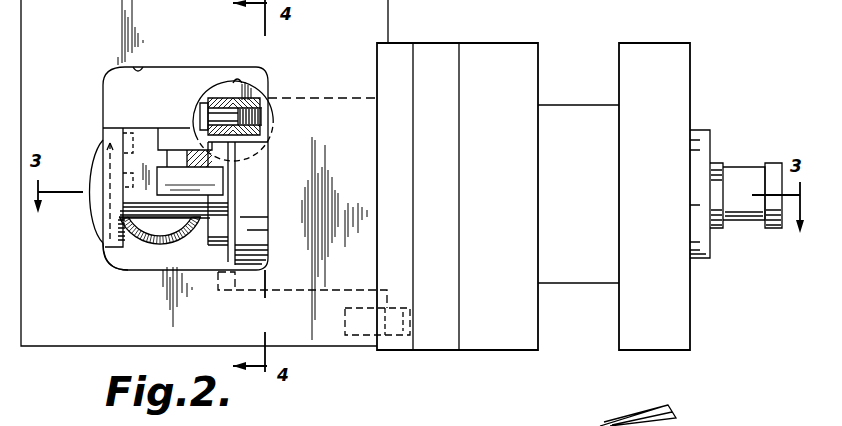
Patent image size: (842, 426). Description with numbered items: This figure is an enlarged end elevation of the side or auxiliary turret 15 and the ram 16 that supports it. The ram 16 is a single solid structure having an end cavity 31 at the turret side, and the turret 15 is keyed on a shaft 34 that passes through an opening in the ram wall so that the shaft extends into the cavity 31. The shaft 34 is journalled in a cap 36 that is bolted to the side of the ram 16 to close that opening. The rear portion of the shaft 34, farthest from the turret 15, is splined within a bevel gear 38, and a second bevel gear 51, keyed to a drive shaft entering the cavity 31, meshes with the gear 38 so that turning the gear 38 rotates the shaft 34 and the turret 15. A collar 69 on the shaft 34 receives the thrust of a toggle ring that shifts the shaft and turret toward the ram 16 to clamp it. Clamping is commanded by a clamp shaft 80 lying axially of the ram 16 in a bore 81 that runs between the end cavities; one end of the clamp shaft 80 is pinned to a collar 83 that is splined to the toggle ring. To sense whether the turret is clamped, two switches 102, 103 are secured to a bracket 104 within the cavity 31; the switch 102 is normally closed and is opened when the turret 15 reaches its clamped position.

The turret 15 is at (678, 316).
The ram 16 is at (57, 333).
The cavity 31 is at (147, 66).
The shaft 34 is at (130, 205).
The cap 36 is at (404, 42).
The bevel gear 38 is at (122, 265).
The bevel gear 51 is at (175, 242).
The collar 69 is at (219, 244).
The clamp shaft 80 is at (221, 100).
The bore 81 is at (240, 81).
The collar 83 is at (262, 98).
The switch 102 is at (182, 135).
The switch 103 is at (215, 181).
The bracket 104 is at (177, 160).